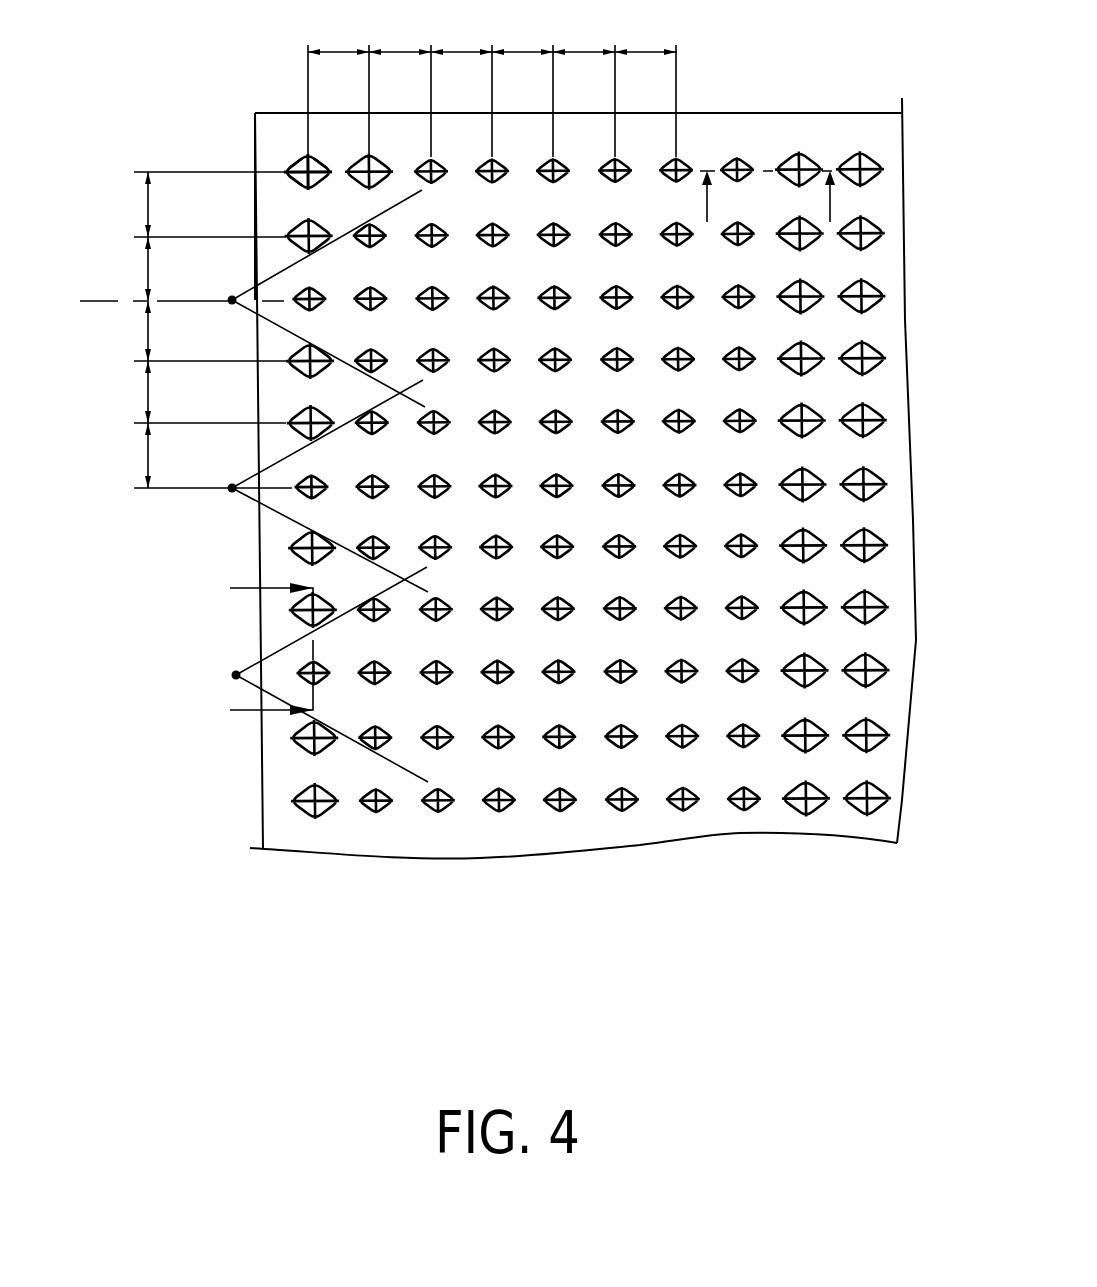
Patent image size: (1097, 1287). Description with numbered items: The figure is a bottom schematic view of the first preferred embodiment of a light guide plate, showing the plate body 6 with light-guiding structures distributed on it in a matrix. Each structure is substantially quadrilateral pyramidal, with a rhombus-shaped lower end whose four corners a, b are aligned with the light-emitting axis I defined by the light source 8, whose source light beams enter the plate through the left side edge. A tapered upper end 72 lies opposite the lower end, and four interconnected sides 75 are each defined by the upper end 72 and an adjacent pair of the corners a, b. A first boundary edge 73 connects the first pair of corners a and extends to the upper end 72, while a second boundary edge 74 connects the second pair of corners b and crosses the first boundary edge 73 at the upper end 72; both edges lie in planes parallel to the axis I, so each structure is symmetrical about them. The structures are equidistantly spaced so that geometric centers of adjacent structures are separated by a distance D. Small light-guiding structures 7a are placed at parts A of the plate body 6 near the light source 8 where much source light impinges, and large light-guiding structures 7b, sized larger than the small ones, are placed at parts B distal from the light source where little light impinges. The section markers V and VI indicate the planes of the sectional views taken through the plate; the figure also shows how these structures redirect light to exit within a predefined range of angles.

The plate body 6 is at (268, 112).
The small light-guiding structure 7a is at (745, 163).
The large light-guiding structure 7b is at (792, 160).
The light source 8 is at (232, 298).
The tapered upper end 72 is at (302, 166).
The first boundary edge 73 is at (306, 180).
The second boundary edge 74 is at (318, 158).
The side 75 is at (290, 378).
The part of the plate body receiving large amount of light A is at (593, 818).
The part of the plate body receiving small amount of light B is at (283, 153).
The first pair of corners a is at (330, 174).
The second pair of corners b is at (307, 158).
The distance D is at (393, 251).
The light-emitting axis I is at (169, 301).
The section line V is at (254, 653).
The section line VI is at (766, 198).